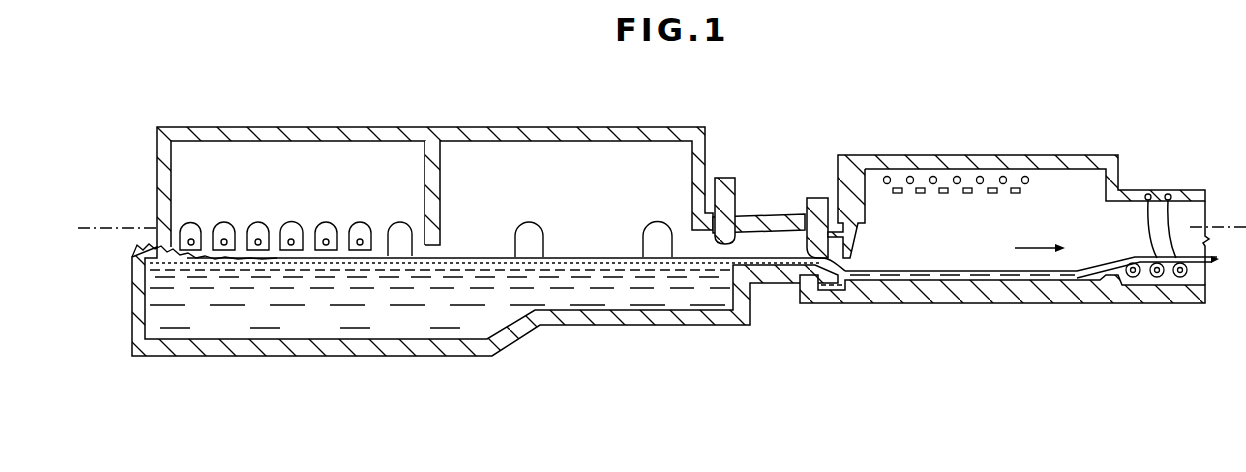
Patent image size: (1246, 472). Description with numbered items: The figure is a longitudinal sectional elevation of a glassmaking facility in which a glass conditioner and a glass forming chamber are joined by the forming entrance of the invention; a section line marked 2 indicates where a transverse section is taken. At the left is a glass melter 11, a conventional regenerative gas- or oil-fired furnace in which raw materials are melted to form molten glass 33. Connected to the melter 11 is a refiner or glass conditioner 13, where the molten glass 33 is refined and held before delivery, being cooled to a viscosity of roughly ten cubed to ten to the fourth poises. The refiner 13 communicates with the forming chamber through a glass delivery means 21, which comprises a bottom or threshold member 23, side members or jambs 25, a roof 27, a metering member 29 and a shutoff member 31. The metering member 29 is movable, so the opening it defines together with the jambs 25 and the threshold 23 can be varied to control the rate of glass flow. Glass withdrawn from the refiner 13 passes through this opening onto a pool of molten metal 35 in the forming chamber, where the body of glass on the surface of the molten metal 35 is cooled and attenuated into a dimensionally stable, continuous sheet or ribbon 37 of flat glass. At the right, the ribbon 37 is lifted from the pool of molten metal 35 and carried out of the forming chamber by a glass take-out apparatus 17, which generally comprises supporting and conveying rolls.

The section line 2- 2 is at (94, 246).
The glass melter 11 is at (285, 112).
The refiner or glass conditioner 13 is at (532, 113).
The glass take-out apparatus 17 is at (1151, 172).
The glass delivery means 21 is at (820, 148).
The bottom or threshold member 23 is at (772, 253).
The side members or jambs 25 is at (845, 262).
The roof 27 is at (836, 218).
The metering member 29 is at (808, 198).
The shutoff member 31 is at (726, 178).
The molten glass 33 is at (480, 304).
The pool of molten metal 35 is at (908, 284).
The continuous sheet or ribbon of flat glass 37 is at (935, 271).